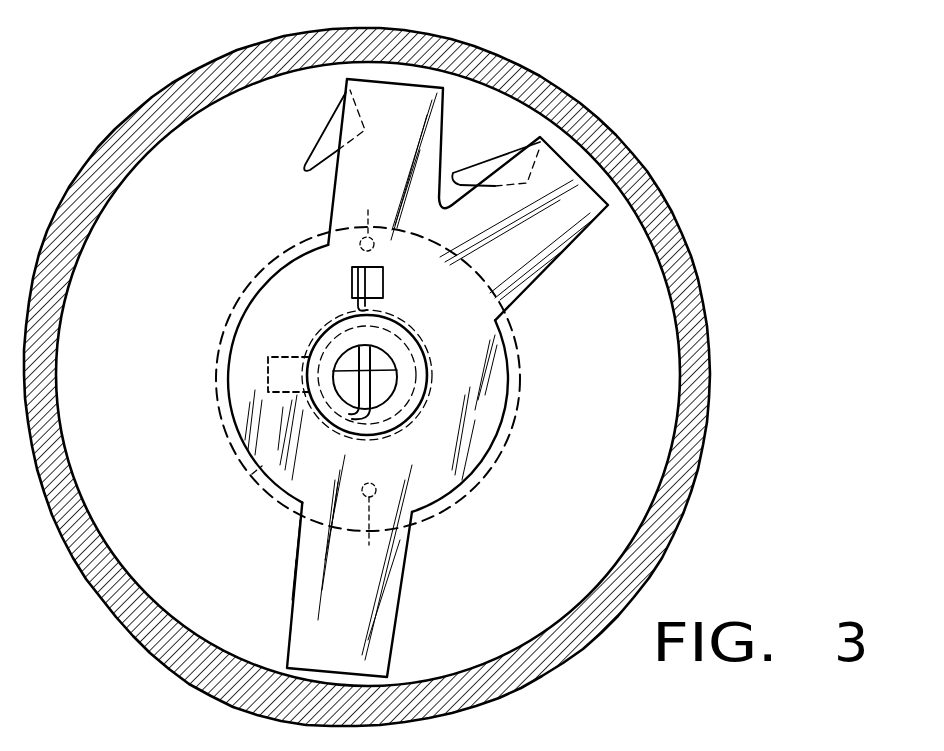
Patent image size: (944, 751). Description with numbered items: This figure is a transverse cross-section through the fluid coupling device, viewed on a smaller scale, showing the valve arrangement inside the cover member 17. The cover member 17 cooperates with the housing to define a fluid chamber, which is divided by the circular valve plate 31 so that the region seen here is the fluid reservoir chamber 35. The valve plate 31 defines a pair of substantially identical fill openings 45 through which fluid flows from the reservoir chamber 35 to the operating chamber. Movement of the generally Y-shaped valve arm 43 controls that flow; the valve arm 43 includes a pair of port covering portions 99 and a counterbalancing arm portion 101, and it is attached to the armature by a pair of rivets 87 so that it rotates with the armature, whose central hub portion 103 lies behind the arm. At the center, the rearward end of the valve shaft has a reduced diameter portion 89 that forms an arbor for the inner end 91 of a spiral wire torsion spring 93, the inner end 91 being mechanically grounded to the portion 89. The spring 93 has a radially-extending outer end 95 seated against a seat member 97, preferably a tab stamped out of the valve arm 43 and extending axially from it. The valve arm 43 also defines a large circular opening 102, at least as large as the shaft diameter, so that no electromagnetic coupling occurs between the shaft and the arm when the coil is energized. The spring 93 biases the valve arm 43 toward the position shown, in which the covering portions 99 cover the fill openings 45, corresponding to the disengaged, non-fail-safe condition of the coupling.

The cover member 17 is at (550, 82).
The valve plate 31 is at (149, 176).
The fluid reservoir chamber 35 is at (120, 376).
The valve arm 43 is at (518, 411).
The fill opening 45 is at (328, 143).
The rivets 87 is at (365, 383).
The reduced diameter portion 89 is at (385, 388).
The inner end 91 is at (397, 370).
The spiral wire torsion spring 93 is at (293, 390).
The radially-extending outer end 95 is at (383, 280).
The seat member 97 is at (352, 282).
The port covering portions 99 is at (389, 98).
The counterbalancing arm portion 101 is at (368, 652).
The large circular opening 102 is at (397, 323).
The central hub portion 103 is at (252, 474).